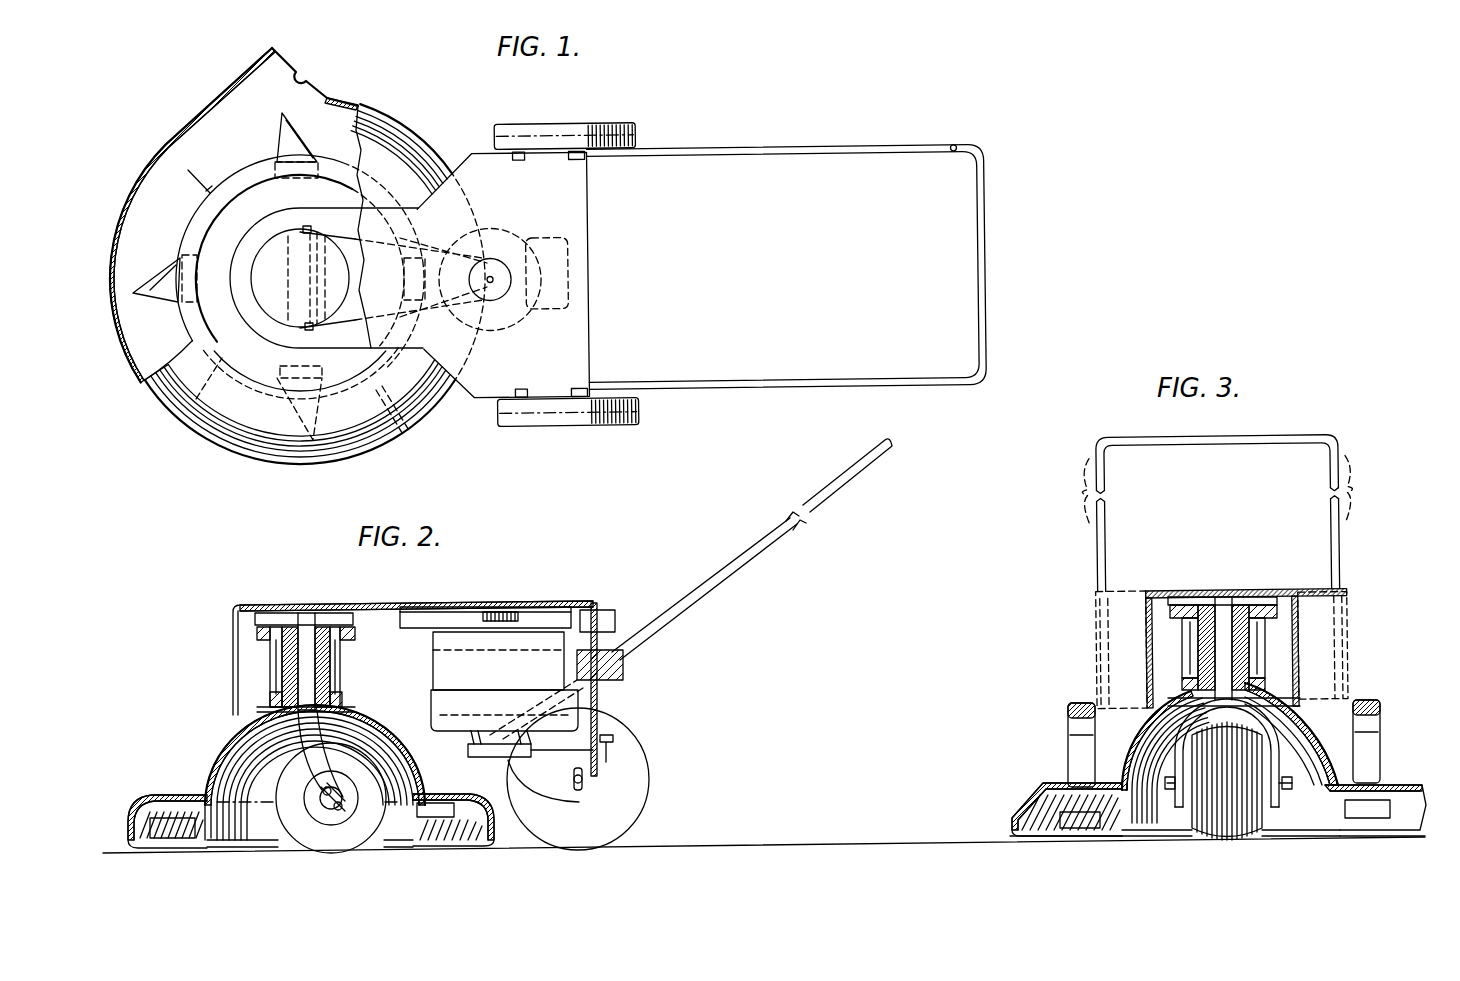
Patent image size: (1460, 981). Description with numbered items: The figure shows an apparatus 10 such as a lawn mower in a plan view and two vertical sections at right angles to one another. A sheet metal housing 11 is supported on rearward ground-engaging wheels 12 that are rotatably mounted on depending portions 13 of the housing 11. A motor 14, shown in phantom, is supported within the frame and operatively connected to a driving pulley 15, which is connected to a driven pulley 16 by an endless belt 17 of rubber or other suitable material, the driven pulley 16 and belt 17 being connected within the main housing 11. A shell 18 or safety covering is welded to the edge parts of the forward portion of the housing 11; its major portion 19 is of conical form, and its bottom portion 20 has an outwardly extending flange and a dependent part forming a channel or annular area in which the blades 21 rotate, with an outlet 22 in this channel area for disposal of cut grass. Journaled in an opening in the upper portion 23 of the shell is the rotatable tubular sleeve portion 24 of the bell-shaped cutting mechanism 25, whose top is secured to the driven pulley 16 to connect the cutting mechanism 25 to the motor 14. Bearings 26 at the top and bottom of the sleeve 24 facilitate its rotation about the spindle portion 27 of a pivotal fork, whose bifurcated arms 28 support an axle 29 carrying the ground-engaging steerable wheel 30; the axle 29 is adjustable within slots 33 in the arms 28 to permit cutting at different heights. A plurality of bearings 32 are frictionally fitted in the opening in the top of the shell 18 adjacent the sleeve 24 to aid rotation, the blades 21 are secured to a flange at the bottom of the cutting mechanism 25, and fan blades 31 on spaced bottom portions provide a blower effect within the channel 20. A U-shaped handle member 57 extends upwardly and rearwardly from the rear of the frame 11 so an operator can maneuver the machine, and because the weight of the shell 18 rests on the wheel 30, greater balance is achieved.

In FIG. 1, the apparatus 10 is at (678, 114).
In FIG. 2, the apparatus 10 is at (567, 559).
In FIG. 3, the apparatus 10 is at (1361, 552).
In FIG. 1, the housing 11 is at (589, 332).
In FIG. 2, the housing 11 is at (573, 600).
In FIG. 3, the housing 11 is at (1157, 591).
In FIG. 1, the ground-engaging wheels 12 is at (566, 127).
In FIG. 2, the ground-engaging wheels 12 is at (637, 774).
In FIG. 3, the ground-engaging wheels 12 is at (1072, 715).
In FIG. 2, the depending portions 13 is at (600, 695).
In FIG. 1, the motor 14 is at (564, 289).
In FIG. 2, the motor 14 is at (520, 685).
In FIG. 1, the driving pulley 15 is at (496, 261).
In FIG. 2, the driving pulley 15 is at (501, 604).
In FIG. 1, the driven pulley 16 is at (292, 293).
In FIG. 2, the driven pulley 16 is at (303, 613).
In FIG. 3, the driven pulley 16 is at (1270, 590).
In FIG. 1, the endless belt 17 is at (414, 330).
In FIG. 2, the endless belt 17 is at (406, 617).
In FIG. 1, the shell 18 is at (192, 438).
In FIG. 2, the shell 18 is at (197, 748).
In FIG. 1, the major portion of the shell 19 is at (352, 377).
In FIG. 2, the major portion of the shell 19 is at (210, 753).
In FIG. 3, the major portion of the shell 19 is at (1319, 730).
In FIG. 1, the bottom portion 20 is at (280, 422).
In FIG. 2, the bottom portion 20 is at (143, 798).
In FIG. 3, the bottom portion 20 is at (1030, 790).
In FIG. 1, the blades 21 is at (160, 277).
In FIG. 2, the blades 21 is at (177, 842).
In FIG. 3, the blades 21 is at (1087, 830).
In FIG. 1, the outlet 22 is at (308, 85).
In FIG. 2, the upper portion of the shell 23 is at (272, 668).
In FIG. 3, the upper portion of the shell 23 is at (1182, 647).
In FIG. 2, the tubular sleeve portion 24 is at (282, 652).
In FIG. 3, the tubular sleeve portion 24 is at (1245, 640).
In FIG. 1, the bell-shaped cutting mechanism 25 is at (267, 200).
In FIG. 2, the bell-shaped cutting mechanism 25 is at (237, 758).
In FIG. 3, the bell-shaped cutting mechanism 25 is at (1152, 750).
In FIG. 2, the bearings 26 is at (330, 626).
In FIG. 3, the bearings 26 is at (1236, 600).
In FIG. 2, the spindle portion 27 is at (298, 626).
In FIG. 3, the spindle portion 27 is at (1220, 610).
In FIG. 2, the bifurcated arms 28 is at (300, 727).
In FIG. 3, the bifurcated arms 28 is at (1274, 738).
In FIG. 2, the axle 29 is at (325, 808).
In FIG. 3, the axle 29 is at (1267, 803).
In FIG. 2, the wheel 30 is at (357, 832).
In FIG. 3, the wheel 30 is at (1213, 823).
In FIG. 1, the fan blades 31 is at (210, 186).
In FIG. 2, the bearings 32 is at (268, 640).
In FIG. 3, the bearings 32 is at (1182, 633).
In FIG. 2, the slots 33 is at (382, 776).
In FIG. 1, the U-shaped handle member 57 is at (802, 156).
In FIG. 2, the U-shaped handle member 57 is at (742, 548).
In FIG. 3, the U-shaped handle member 57 is at (1281, 438).